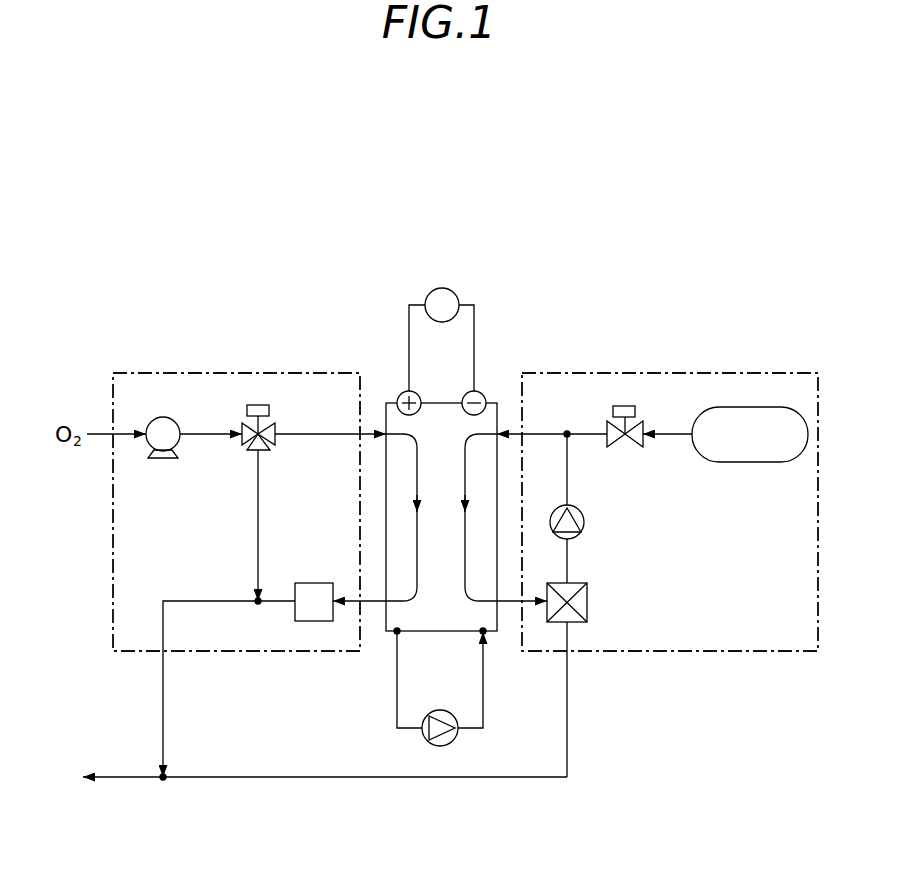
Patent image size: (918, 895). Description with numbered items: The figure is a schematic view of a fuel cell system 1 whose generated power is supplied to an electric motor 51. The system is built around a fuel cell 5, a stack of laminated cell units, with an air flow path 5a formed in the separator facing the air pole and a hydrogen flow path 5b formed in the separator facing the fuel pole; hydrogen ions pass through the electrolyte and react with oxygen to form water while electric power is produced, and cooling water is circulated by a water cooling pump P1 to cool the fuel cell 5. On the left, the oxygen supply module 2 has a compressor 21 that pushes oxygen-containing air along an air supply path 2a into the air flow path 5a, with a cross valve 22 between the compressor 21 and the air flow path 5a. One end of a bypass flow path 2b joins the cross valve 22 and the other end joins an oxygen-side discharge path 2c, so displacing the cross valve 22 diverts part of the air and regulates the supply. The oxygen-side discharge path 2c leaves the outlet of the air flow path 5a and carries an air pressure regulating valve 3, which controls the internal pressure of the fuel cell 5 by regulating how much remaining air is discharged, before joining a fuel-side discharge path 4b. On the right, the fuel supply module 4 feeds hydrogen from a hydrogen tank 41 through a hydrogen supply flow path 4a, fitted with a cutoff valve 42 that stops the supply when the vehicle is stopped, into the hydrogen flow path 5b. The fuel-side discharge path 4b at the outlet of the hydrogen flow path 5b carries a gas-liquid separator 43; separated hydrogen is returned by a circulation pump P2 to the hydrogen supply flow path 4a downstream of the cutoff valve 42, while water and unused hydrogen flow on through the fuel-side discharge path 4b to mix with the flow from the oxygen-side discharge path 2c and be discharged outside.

The fuel cell system 1 is at (126, 271).
The oxygen supply module 2 is at (172, 372).
The compressor 21 is at (168, 420).
The cross valve 22 is at (268, 405).
The air supply path 2a is at (126, 437).
The bypass flow path 2b is at (259, 490).
The oxygen-side discharge path 2c is at (205, 601).
The air pressure regulating valve 3 is at (313, 583).
The fuel cell 5 is at (442, 403).
The electric motor 51 is at (441, 289).
The air flow path 5a is at (418, 495).
The hydrogen flow path 5b is at (463, 578).
The water cooling pump P1 is at (447, 710).
The fuel supply module 4 is at (700, 372).
The hydrogen supply flow path 4a is at (545, 434).
The cutoff valve 42 is at (628, 450).
The hydrogen tank 41 is at (762, 462).
The circulation pump P2 is at (584, 522).
The gas-liquid separator 43 is at (588, 602).
The fuel-side discharge path 4b is at (568, 720).